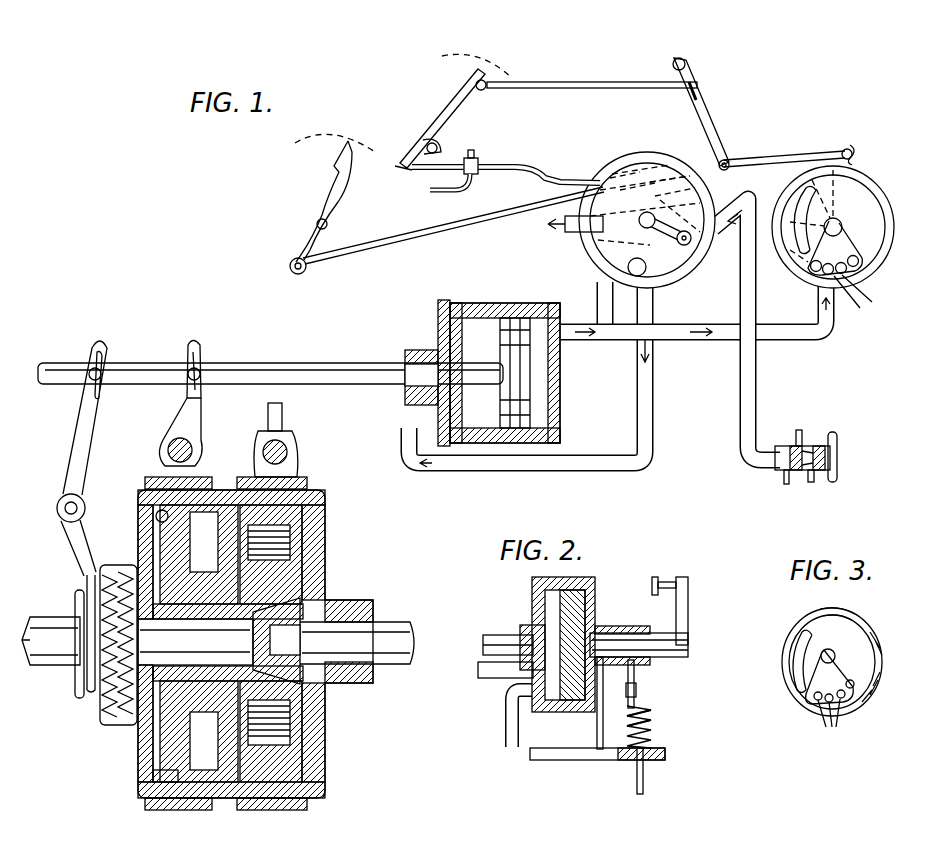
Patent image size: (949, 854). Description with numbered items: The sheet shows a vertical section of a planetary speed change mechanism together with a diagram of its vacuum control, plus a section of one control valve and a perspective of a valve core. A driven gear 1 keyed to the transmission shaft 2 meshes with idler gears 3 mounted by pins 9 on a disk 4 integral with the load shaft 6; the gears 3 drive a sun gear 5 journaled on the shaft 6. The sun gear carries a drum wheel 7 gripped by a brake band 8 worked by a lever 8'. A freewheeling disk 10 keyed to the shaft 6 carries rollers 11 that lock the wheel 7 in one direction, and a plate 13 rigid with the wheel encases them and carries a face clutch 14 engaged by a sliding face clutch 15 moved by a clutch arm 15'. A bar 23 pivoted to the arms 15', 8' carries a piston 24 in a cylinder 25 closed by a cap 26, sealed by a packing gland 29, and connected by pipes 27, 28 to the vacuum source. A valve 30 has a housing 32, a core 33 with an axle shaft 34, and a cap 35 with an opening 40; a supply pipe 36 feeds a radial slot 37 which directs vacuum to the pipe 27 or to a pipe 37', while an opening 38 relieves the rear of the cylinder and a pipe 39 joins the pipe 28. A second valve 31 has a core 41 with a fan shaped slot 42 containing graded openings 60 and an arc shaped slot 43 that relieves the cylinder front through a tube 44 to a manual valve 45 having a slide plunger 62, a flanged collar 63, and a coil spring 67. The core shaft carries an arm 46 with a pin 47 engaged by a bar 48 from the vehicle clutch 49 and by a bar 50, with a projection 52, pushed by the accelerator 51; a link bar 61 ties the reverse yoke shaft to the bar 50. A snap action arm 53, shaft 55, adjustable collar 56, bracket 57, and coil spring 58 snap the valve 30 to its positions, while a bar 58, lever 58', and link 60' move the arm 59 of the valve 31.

In FIG. 1, the driven gear 1 is at (302, 488).
In FIG. 1, the transmission shaft 2 is at (357, 643).
In FIG. 1, the idler gear 3 is at (326, 511).
In FIG. 1, the disk 4 is at (320, 560).
In FIG. 1, the sun gear 5 is at (240, 598).
In FIG. 1, the load shaft 6 is at (45, 630).
In FIG. 1, the drum wheel 7 is at (222, 808).
In FIG. 1, the brake band 8 is at (221, 446).
In FIG. 1, the lever 8' is at (171, 404).
In FIG. 1, the pins 9 is at (288, 543).
In FIG. 1, the freewheeling disk 10 is at (145, 541).
In FIG. 1, the rollers 11 is at (152, 515).
In FIG. 1, the plate 13 is at (150, 778).
In FIG. 1, the face clutch 14 is at (130, 725).
In FIG. 1, the face clutch 15 is at (76, 654).
In FIG. 1, the clutch arm 15' is at (72, 458).
In FIG. 1, the bar 23 is at (252, 380).
In FIG. 1, the piston 24 is at (500, 403).
In FIG. 1, the cylinder 25 is at (576, 415).
In FIG. 1, the cap 26 is at (440, 330).
In FIG. 1, the pipe 27 is at (401, 437).
In FIG. 2, the pipe 27 is at (500, 670).
In FIG. 1, the pipe 28 is at (596, 342).
In FIG. 1, the packing gland 29 is at (404, 396).
In FIG. 1, the valve 30 is at (647, 215).
In FIG. 2, the valve 30 is at (502, 598).
In FIG. 1, the valve 31 is at (837, 221).
In FIG. 1, the housing 32 is at (648, 158).
In FIG. 2, the housing 32 is at (548, 578).
In FIG. 1, the core 33 is at (665, 216).
In FIG. 2, the core 33 is at (578, 580).
In FIG. 2, the axle shaft 34 is at (690, 645).
In FIG. 2, the cap 35 is at (598, 586).
In FIG. 1, the pipe 36 is at (546, 228).
In FIG. 2, the pipe 36 is at (510, 637).
In FIG. 1, the slot 37 is at (636, 239).
In FIG. 2, the slot 37 is at (552, 729).
In FIG. 1, the pipe 37' is at (736, 185).
In FIG. 2, the pipe 37' is at (493, 718).
In FIG. 1, the opening 38 is at (647, 267).
In FIG. 1, the pipe 39 is at (597, 286).
In FIG. 2, the opening 40 is at (600, 680).
In FIG. 1, the core 41 is at (851, 217).
In FIG. 3, the core 41 is at (830, 645).
In FIG. 1, the slot 42 is at (855, 245).
In FIG. 3, the slot 42 is at (845, 672).
In FIG. 1, the slot 43 is at (803, 262).
In FIG. 3, the slot 43 is at (793, 676).
In FIG. 1, the tube 44 is at (764, 264).
In FIG. 1, the valve 45 is at (843, 442).
In FIG. 2, the arm 46 is at (688, 604).
In FIG. 2, the pin 47 is at (662, 577).
In FIG. 1, the bar 48 is at (412, 240).
In FIG. 1, the vehicle clutch 49 is at (340, 200).
In FIG. 1, the bar 50 is at (510, 155).
In FIG. 1, the accelerator 51 is at (440, 135).
In FIG. 1, the projection 52 is at (580, 234).
In FIG. 2, the arm 53 is at (636, 682).
In FIG. 2, the shaft 55 is at (637, 775).
In FIG. 2, the adjustable collar 56 is at (652, 708).
In FIG. 2, the bracket 57 is at (562, 760).
In FIG. 1, the coil spring 58 is at (592, 97).
In FIG. 2, the coil spring 58 is at (661, 724).
In FIG. 1, the lever 58' is at (715, 114).
In FIG. 1, the arm 59 is at (855, 148).
In FIG. 1, the openings 60 is at (862, 298).
In FIG. 3, the openings 60 is at (838, 724).
In FIG. 1, the link 60' is at (784, 148).
In FIG. 1, the link bar 61 is at (445, 192).
In FIG. 1, the slide plunger 62 is at (812, 484).
In FIG. 1, the flanged collar 63 is at (784, 480).
In FIG. 1, the coil spring 67 is at (806, 430).